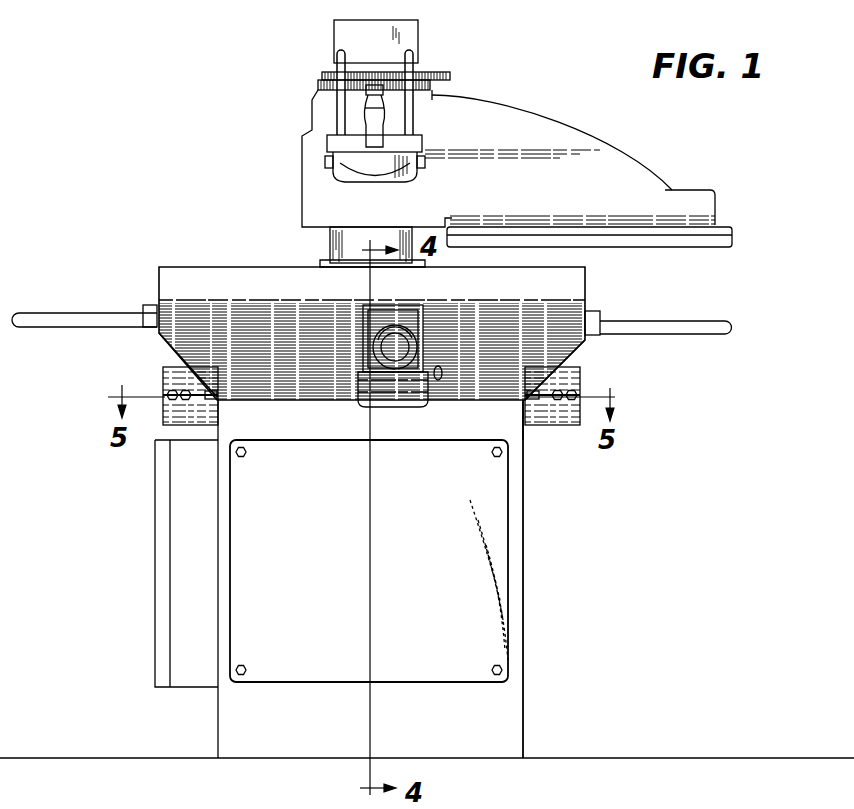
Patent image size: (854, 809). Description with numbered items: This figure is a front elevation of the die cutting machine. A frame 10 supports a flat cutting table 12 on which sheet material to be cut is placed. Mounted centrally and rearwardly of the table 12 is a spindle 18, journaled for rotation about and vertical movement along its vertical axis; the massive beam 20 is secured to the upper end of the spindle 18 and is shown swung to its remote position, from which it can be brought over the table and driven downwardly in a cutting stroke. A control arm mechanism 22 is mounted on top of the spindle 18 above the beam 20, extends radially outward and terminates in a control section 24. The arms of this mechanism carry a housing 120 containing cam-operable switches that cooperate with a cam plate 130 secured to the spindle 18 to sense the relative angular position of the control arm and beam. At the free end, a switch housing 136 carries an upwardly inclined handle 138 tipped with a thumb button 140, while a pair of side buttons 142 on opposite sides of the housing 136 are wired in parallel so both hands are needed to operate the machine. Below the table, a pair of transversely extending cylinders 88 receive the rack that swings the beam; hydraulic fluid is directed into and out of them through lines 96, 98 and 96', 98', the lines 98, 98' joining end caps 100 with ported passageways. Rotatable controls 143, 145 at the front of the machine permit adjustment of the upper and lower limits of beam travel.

The frame 10 is at (505, 723).
The cutting table 12 is at (567, 283).
The spindle 18 is at (345, 242).
The beam 20 is at (550, 132).
The control arm mechanism 22 is at (306, 122).
The control section 24 is at (450, 138).
The cylinders 88 is at (182, 377).
The line 96 is at (552, 441).
The line 96' is at (149, 445).
The line 98 is at (594, 441).
The line 98' is at (144, 437).
The end cap 100 is at (163, 377).
The housing 120 is at (403, 28).
The cam plate 130 is at (452, 80).
The switch housing 136 is at (345, 165).
The handle 138 is at (372, 108).
The thumb button 140 is at (367, 88).
The side buttons 142 is at (325, 162).
The rotatable control 143 is at (393, 342).
The rotatable control 145 is at (373, 350).